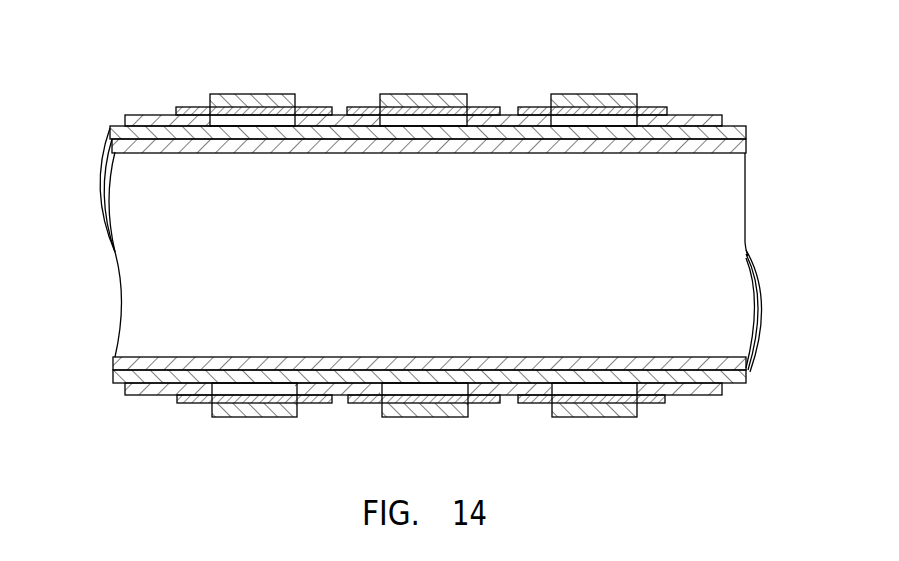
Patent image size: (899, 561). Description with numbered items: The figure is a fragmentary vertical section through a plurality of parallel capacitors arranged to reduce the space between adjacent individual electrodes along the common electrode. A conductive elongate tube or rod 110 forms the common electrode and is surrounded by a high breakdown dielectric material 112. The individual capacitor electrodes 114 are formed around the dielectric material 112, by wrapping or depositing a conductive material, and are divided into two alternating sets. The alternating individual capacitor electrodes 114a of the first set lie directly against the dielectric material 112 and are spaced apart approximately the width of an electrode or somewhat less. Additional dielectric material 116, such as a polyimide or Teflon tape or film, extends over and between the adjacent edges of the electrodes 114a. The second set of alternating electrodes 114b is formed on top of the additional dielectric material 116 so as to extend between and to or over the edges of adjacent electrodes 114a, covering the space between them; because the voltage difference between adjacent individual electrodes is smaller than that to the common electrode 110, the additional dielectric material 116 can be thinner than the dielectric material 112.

The conductive elongate tube or rod 110 is at (695, 152).
The high breakdown dielectric material 112 is at (746, 131).
The individual capacitor electrodes 114 is at (227, 92).
The capacitor electrodes of first set 114a is at (508, 113).
The capacitor electrodes of second set 114b is at (410, 92).
The additional dielectric material 116 is at (367, 107).